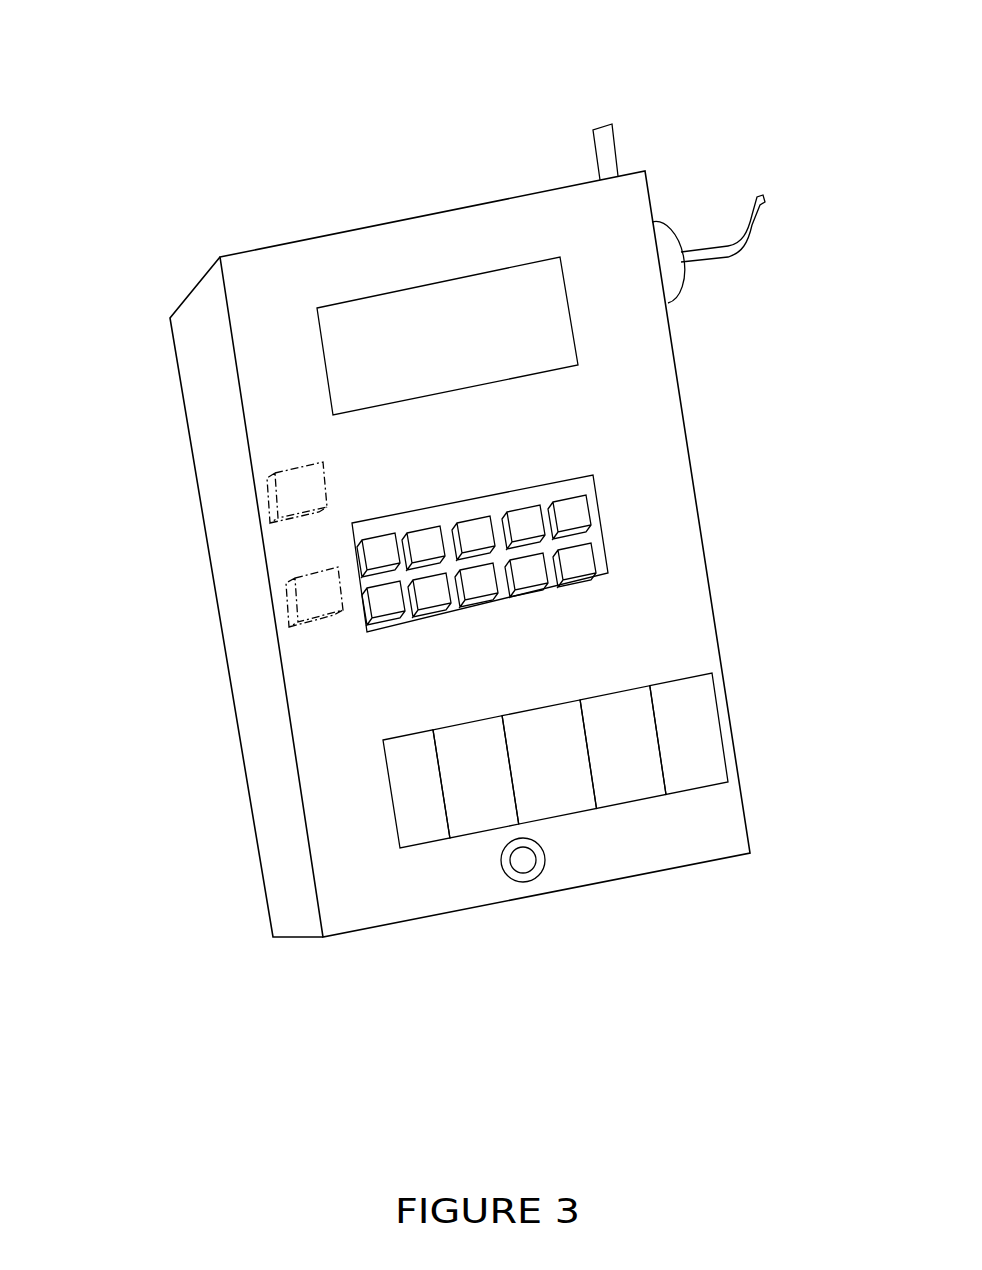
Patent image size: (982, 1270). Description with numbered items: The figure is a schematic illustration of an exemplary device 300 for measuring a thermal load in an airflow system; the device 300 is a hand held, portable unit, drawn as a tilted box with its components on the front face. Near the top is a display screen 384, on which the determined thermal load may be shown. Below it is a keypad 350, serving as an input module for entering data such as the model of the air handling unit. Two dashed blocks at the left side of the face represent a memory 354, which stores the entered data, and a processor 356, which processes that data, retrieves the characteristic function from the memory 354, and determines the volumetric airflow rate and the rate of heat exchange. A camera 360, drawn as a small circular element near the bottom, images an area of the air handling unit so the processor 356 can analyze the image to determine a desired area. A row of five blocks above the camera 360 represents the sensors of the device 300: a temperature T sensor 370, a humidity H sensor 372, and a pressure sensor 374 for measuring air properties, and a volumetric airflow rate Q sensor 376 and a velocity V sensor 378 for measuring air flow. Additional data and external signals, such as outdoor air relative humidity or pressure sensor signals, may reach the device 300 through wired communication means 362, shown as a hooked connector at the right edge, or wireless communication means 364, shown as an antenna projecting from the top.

The device 300 is at (232, 72).
The keypad 350 is at (590, 485).
The memory 354 is at (320, 602).
The processor 356 is at (305, 492).
The camera 360 is at (523, 862).
The wired communication means 362 is at (728, 240).
The wireless communication means 364 is at (608, 153).
The temperature T sensor 370 is at (415, 788).
The humidity H sensor 372 is at (467, 802).
The pressure sensor 374 is at (540, 782).
The volumetric airflow rate Q sensor 376 is at (603, 762).
The velocity V sensor 378 is at (702, 757).
The display screen 384 is at (468, 318).